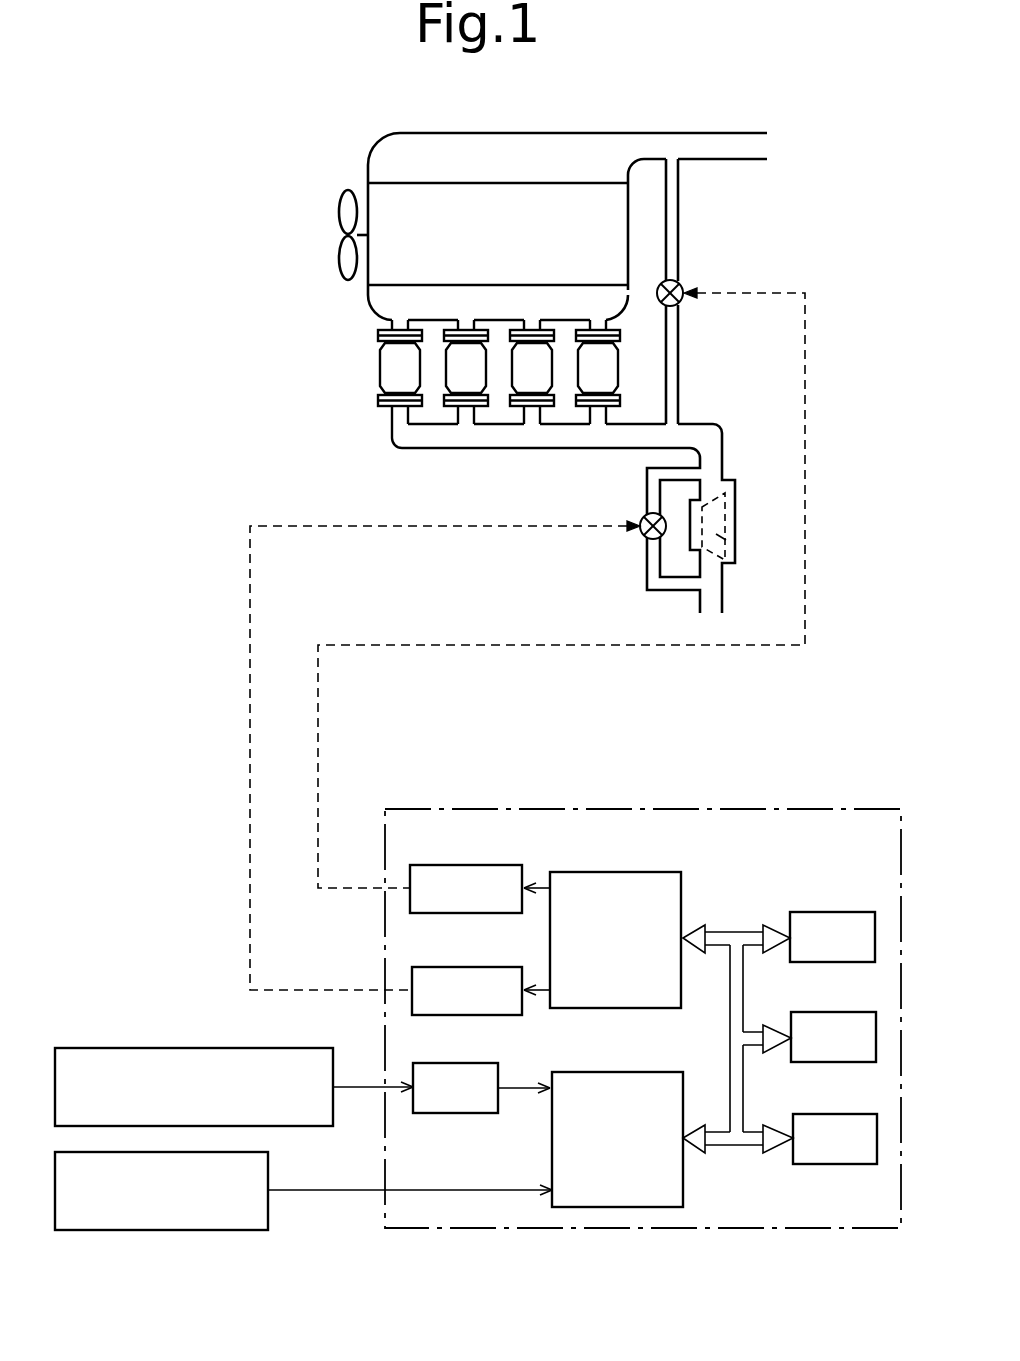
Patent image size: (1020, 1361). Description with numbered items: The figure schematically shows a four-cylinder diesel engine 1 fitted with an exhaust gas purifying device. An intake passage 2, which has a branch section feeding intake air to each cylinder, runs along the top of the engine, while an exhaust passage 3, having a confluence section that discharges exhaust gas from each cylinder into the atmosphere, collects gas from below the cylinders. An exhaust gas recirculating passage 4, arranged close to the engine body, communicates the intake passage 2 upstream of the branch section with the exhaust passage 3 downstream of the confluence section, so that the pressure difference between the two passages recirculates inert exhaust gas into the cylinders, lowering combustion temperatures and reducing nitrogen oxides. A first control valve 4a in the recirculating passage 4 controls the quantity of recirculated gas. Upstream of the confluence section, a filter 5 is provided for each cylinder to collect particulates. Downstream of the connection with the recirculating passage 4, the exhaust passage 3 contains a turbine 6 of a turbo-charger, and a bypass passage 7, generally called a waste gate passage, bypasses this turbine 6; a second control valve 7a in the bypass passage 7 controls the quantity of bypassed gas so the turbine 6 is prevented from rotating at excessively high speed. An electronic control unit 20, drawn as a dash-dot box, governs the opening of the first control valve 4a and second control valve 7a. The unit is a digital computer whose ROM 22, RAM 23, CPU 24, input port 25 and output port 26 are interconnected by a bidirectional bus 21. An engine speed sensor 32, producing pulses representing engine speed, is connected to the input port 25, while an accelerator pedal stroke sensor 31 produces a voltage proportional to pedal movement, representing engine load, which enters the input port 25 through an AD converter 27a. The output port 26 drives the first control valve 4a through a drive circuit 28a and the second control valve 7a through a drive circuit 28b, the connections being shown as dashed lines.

The diesel engine 1 is at (344, 293).
The intake passage 2 is at (719, 133).
The exhaust passage 3 is at (705, 437).
The exhaust gas recirculating passage 4 is at (679, 235).
The first control valve 4a is at (685, 305).
The filter 5 is at (422, 375).
The turbine 6 is at (736, 526).
The bypass passage 7 is at (647, 566).
The second control valve 7a is at (642, 516).
The electronic control unit 20 is at (712, 809).
The bidirectional bus 21 is at (735, 932).
The ROM 22 is at (835, 912).
The RAM 23 is at (842, 1012).
The CPU 24 is at (839, 1114).
The input port 25 is at (620, 1072).
The output port 26 is at (613, 872).
The AD converter 27a is at (458, 1115).
The drive circuit 28a is at (455, 865).
The drive circuit 28b is at (458, 967).
The accelerator pedal stroke sensor 31 is at (268, 1210).
The engine speed sensor 32 is at (305, 1048).